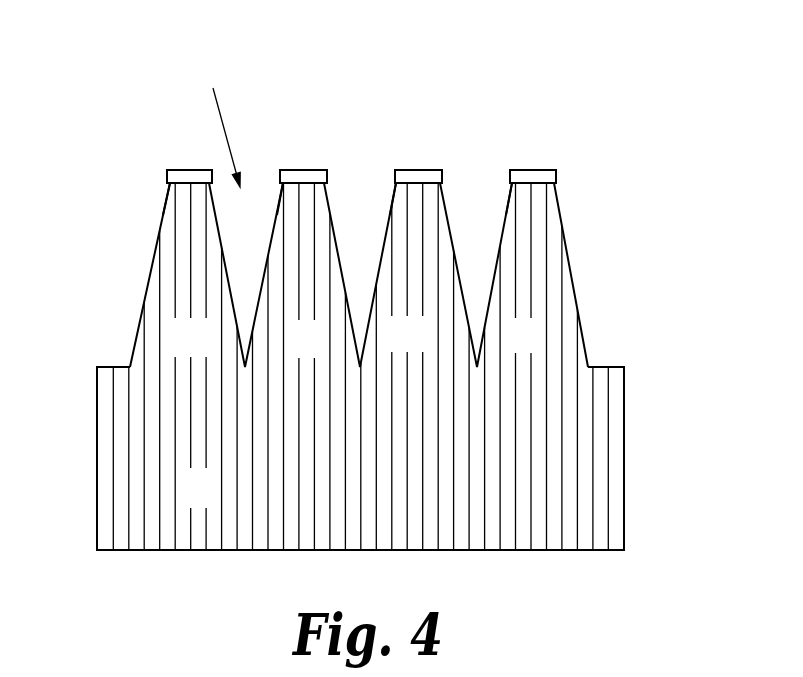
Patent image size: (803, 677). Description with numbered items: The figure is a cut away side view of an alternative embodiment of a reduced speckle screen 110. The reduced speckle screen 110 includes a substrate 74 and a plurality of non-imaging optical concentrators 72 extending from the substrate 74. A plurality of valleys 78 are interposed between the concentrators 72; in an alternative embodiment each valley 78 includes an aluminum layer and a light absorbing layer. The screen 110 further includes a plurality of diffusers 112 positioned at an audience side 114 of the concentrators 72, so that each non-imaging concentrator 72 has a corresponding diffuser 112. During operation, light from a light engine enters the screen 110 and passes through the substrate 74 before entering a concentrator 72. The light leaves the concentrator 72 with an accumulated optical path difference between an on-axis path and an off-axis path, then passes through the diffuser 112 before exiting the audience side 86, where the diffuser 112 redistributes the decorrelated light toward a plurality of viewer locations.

The non-imaging optical concentrator 72 is at (207, 352).
The substrate 74 is at (214, 503).
The valley 78 is at (127, 281).
The audience side 86 is at (213, 88).
The reduced speckle screen 110 is at (624, 487).
The diffuser 112 is at (183, 170).
The audience side of concentrators 114 is at (168, 192).